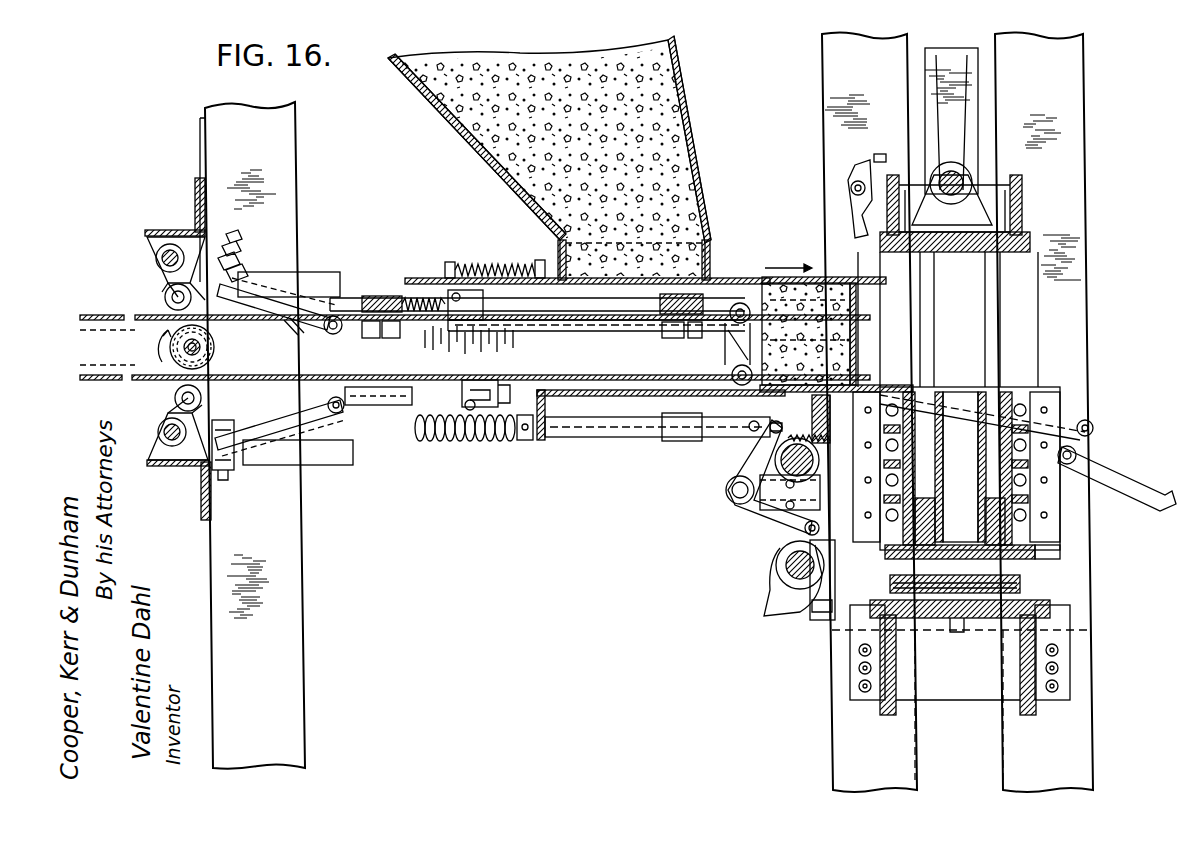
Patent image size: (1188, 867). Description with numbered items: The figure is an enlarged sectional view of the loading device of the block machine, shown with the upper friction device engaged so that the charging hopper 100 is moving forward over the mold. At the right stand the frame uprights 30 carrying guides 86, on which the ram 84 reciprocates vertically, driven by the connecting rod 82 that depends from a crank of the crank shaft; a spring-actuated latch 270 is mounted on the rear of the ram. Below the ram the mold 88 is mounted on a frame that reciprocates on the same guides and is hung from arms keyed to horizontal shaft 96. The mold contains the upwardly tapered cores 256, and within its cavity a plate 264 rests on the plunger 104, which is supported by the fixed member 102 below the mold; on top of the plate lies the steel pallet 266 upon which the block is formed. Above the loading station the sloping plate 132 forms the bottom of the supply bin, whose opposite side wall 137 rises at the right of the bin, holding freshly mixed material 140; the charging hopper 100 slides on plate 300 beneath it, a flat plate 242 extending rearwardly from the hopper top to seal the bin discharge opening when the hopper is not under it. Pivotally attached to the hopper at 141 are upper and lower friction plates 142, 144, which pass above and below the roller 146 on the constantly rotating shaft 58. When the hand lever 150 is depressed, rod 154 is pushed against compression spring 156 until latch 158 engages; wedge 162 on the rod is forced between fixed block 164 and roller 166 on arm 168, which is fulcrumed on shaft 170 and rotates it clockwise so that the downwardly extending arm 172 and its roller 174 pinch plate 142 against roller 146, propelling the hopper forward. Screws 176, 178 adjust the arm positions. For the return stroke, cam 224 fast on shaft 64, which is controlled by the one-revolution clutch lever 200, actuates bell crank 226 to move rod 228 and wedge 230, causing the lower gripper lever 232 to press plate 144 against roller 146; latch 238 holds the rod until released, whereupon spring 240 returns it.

The frame uprights 30 is at (828, 70).
The constantly rotating shaft 58 is at (202, 346).
The shaft 64 is at (795, 560).
The connecting rod 82 is at (960, 135).
The ram 84 is at (1022, 212).
The guides 86 is at (915, 296).
The mold 88 is at (1025, 420).
The horizontal shaft 96 is at (790, 463).
The charging hopper 100 is at (868, 345).
The fixed member 102 is at (895, 692).
The plunger 104 is at (1040, 548).
The plate 132 is at (478, 150).
The hopper wall 137 is at (695, 125).
The material 140 is at (545, 75).
The pivot 141 is at (728, 340).
The upper friction plate 142 is at (410, 322).
The lower friction plate 144 is at (378, 378).
The roller 146 is at (207, 351).
The hand lever 150 is at (1146, 495).
The rod 154 is at (620, 305).
The compression spring 156 is at (385, 296).
The spring-actuated latch 158 is at (522, 312).
The wedge 162 is at (337, 338).
The fixed block 164 is at (322, 283).
The roller 166 is at (296, 325).
The arm 168 is at (260, 298).
The shaft 170 is at (160, 255).
The downwardly extending arm 172 is at (165, 283).
The roller 174 is at (152, 297).
The screw 176 is at (240, 237).
The screw 178 is at (148, 330).
The clutch lever 200 is at (905, 548).
The cam 224 is at (775, 590).
The bell crank 226 is at (752, 480).
The rod 228 is at (630, 437).
The wedge 230 is at (350, 420).
The lower gripper lever 232 is at (286, 465).
The latch 238 is at (500, 398).
The spring 240 is at (480, 441).
The flat plate 242 is at (430, 278).
The core 256 is at (935, 395).
The plate 264 is at (1030, 517).
The pallet 266 is at (888, 515).
The spring-actuated latch 270 is at (855, 215).
The plate 300 is at (612, 398).